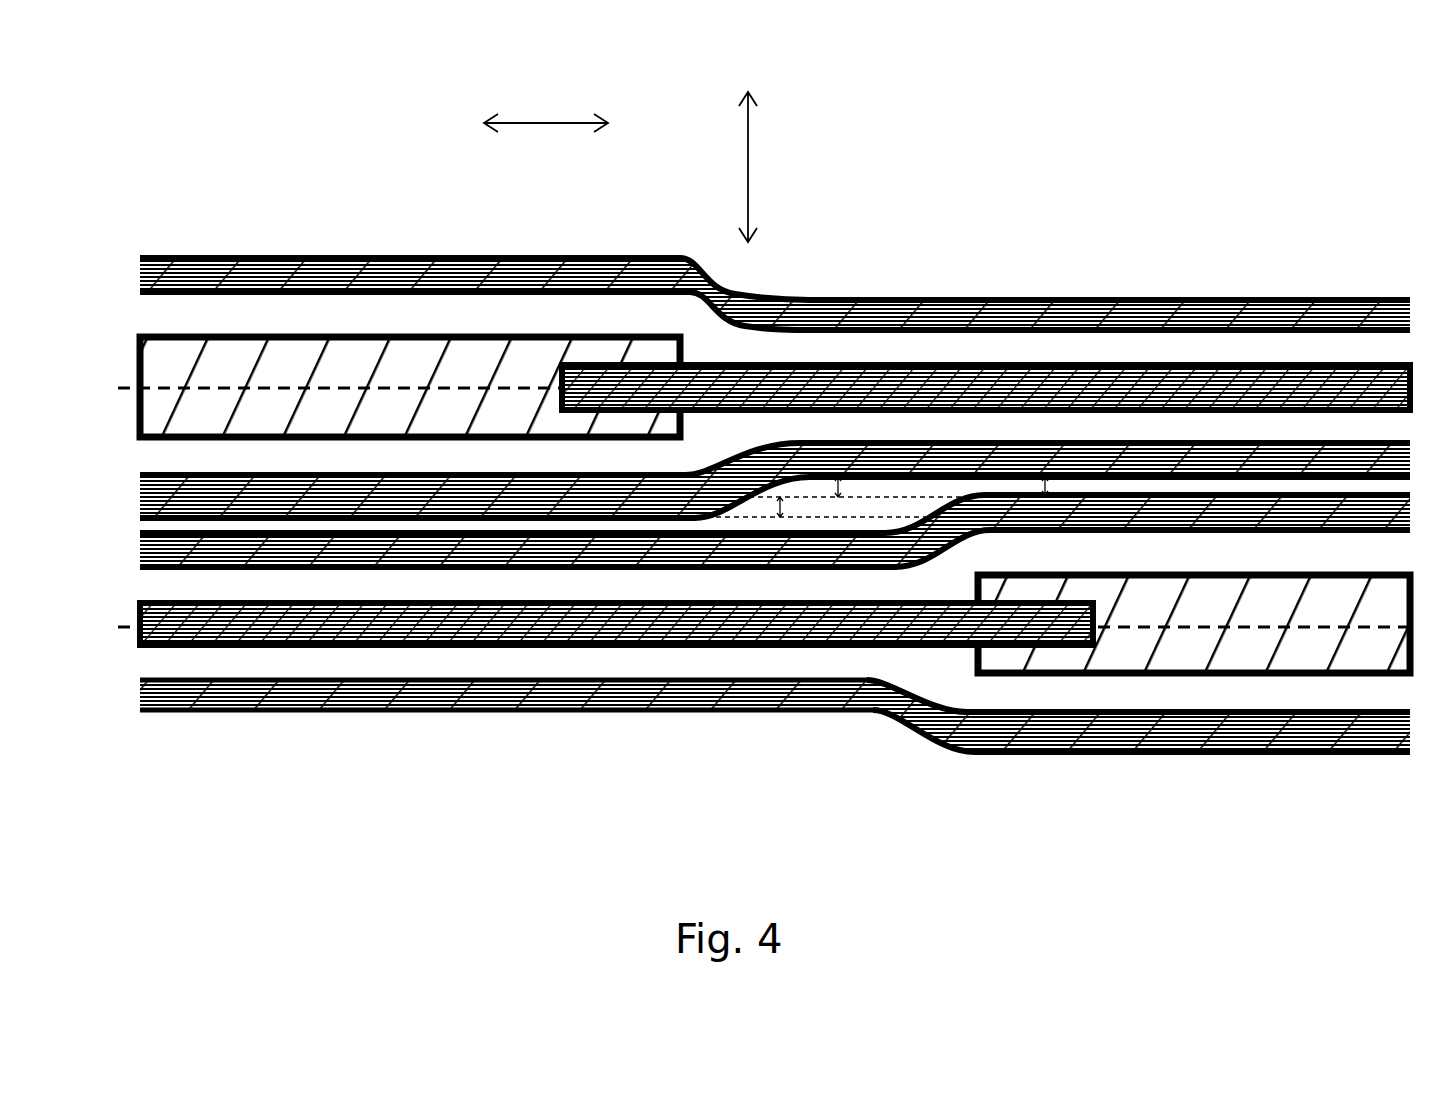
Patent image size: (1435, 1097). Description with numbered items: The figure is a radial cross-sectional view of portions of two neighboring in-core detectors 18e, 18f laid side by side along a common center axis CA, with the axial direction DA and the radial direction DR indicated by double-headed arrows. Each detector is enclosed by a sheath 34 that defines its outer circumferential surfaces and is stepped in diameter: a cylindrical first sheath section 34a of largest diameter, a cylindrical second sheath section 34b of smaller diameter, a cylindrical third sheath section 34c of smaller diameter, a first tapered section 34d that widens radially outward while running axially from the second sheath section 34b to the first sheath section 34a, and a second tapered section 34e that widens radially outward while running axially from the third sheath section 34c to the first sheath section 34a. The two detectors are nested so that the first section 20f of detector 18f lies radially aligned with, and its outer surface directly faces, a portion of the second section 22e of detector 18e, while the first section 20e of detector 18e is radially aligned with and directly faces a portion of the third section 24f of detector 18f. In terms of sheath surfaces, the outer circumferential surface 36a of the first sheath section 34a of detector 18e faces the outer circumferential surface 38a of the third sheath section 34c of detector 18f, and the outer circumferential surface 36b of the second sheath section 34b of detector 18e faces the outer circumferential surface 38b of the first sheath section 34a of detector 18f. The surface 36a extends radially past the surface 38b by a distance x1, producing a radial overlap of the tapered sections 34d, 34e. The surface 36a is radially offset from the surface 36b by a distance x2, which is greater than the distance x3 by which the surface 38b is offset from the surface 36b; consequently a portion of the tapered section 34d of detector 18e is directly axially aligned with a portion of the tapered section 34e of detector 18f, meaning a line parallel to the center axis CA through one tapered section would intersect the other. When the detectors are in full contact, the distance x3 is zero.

The detector 18e is at (1044, 264).
The detector 18f is at (718, 750).
The first section of detector 18e 20e is at (545, 246).
The first section of detector 18f 20f is at (1216, 768).
The second section of detector 18e 22e is at (1160, 292).
The third section of detector 18f 24f is at (348, 716).
The sheath 34 is at (847, 306).
The first sheath section 34a is at (400, 275).
The second sheath section 34b is at (1262, 310).
The third sheath section 34c is at (245, 702).
The first tapered section 34d is at (698, 473).
The second tapered section 34e is at (972, 532).
The outer circumferential surface of sheath section 34a of detector 18e 36a is at (350, 505).
The outer circumferential surface of sheath section 34b of detector 18e 36b is at (1215, 466).
The outer circumferential surface of sheath section 34c of detector 18f 38a is at (340, 549).
The outer circumferential surface of sheath section 34a of detector 18f 38b is at (1170, 522).
The center axis CA is at (276, 384).
The axial direction DA is at (541, 122).
The radial direction DR is at (752, 176).
The radial overlap distance x1 is at (781, 509).
The radial offset distance x2 is at (840, 486).
The radial offset distance x3 is at (1047, 486).